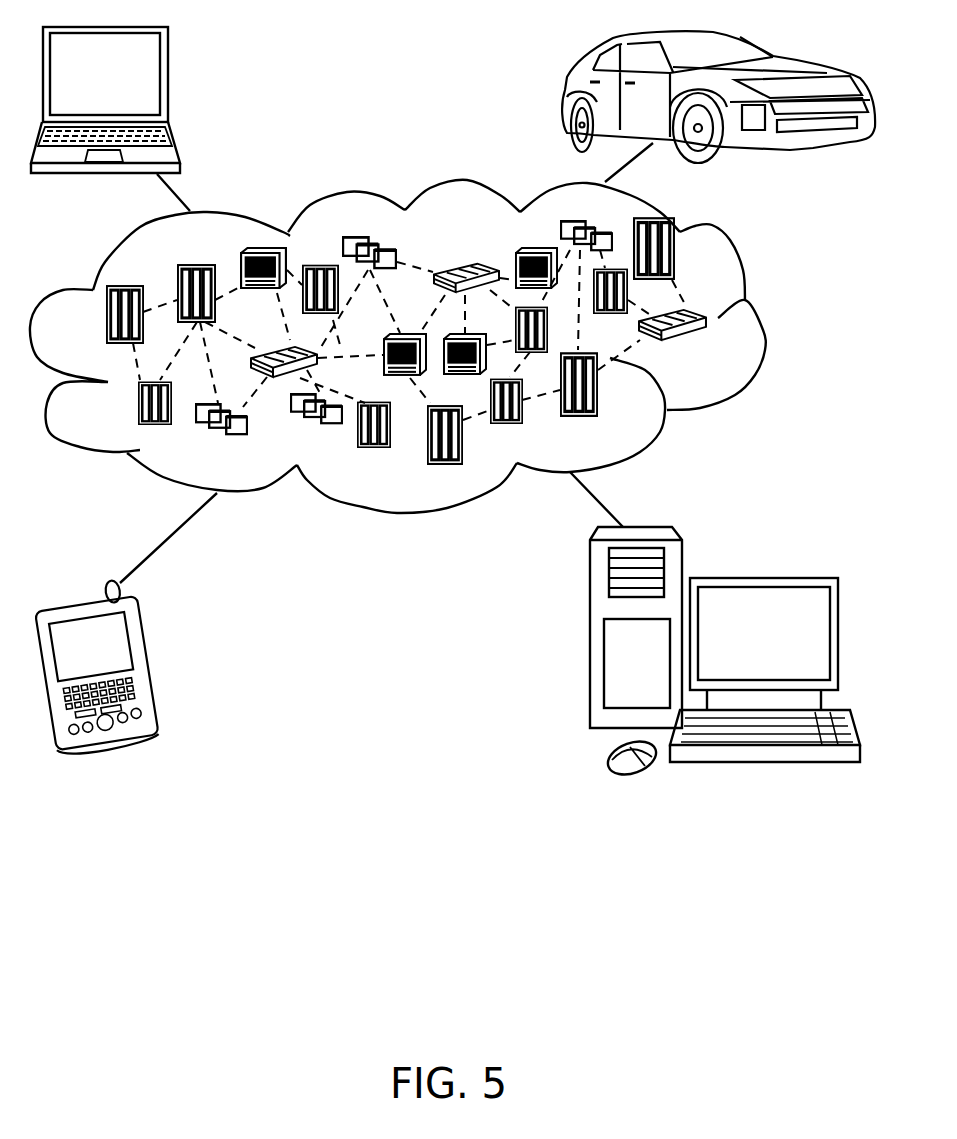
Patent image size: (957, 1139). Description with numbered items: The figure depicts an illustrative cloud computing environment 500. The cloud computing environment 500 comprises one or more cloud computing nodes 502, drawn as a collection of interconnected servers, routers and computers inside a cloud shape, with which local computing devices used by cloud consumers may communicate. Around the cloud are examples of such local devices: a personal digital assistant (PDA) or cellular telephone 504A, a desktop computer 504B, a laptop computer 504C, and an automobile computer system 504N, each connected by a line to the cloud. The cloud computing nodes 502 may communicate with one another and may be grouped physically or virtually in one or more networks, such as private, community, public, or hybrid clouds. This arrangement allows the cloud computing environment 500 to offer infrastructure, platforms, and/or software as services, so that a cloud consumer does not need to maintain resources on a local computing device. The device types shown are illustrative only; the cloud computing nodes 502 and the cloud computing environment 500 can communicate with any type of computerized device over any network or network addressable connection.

The cloud computing environment 500 is at (748, 306).
The cloud computing nodes 502 is at (712, 349).
The personal digital assistant (PDA) or cellular telephone 504A is at (153, 645).
The desktop computer 504B is at (770, 578).
The laptop computer 504C is at (168, 58).
The automobile computer system 504N is at (565, 82).